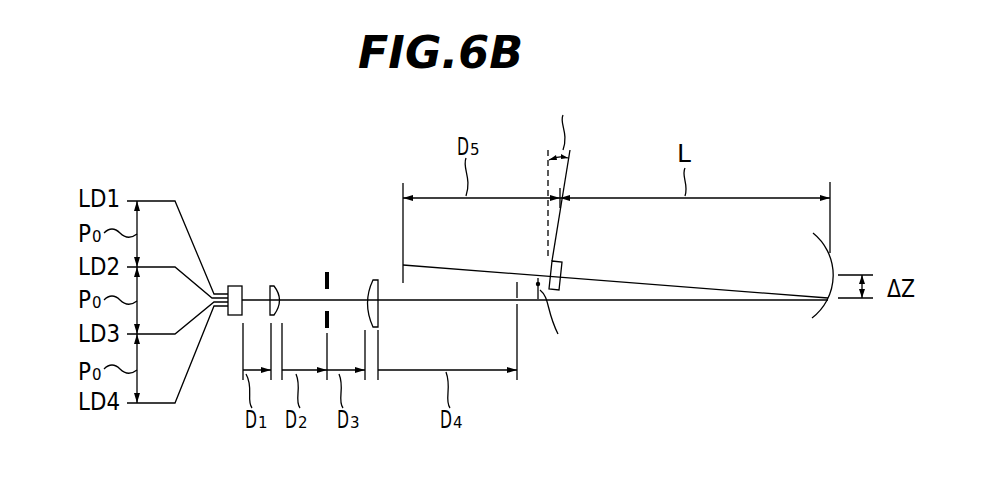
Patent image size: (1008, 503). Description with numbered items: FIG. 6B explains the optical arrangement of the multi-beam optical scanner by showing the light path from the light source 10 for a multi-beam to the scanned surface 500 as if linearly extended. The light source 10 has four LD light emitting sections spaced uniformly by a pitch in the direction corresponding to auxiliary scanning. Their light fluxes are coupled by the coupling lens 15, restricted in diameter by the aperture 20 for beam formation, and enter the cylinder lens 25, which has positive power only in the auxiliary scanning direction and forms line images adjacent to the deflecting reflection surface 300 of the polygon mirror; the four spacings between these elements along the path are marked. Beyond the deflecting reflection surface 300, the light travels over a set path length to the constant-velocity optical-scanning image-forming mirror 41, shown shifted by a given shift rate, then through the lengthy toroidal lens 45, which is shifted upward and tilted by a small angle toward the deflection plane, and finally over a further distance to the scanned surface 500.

The light source for a multi-beam 10 is at (232, 285).
The coupling lens 15 is at (275, 285).
The aperture 20 is at (324, 271).
The cylinder lens 25 is at (370, 280).
The lengthy toroidal lens 45 is at (562, 261).
The constant-velocity optical-scanning image-forming mirror 41 is at (818, 313).
The deflecting reflection surface 300 is at (516, 305).
The scanned surface 500 is at (400, 210).